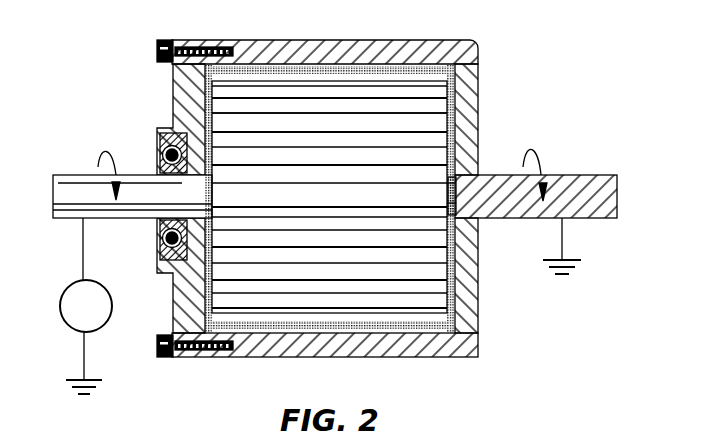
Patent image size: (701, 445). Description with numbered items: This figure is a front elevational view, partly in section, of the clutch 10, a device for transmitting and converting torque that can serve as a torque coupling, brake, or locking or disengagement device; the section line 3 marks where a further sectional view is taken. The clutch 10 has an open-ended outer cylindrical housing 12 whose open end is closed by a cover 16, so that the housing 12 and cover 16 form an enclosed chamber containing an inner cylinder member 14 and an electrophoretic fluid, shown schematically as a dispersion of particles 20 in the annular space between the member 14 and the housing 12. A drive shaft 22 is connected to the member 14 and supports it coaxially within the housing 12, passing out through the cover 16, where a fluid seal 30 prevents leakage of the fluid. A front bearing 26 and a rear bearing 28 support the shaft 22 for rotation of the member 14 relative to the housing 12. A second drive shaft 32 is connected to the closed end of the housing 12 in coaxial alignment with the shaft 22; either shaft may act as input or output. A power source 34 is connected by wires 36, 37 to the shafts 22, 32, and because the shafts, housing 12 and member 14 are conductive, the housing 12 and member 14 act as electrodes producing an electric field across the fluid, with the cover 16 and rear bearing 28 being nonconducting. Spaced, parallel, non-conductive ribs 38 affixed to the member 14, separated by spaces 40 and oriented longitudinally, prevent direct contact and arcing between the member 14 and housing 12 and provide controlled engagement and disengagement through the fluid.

The clutch 10 is at (108, 36).
The outer cylindrical housing 12 is at (460, 50).
The inner cylinder member 14 is at (432, 122).
The cover 16 is at (180, 88).
The particles 20 is at (263, 63).
The drive shaft 22 is at (82, 175).
The front bearing 26 is at (166, 240).
The rear bearing 28 is at (483, 270).
The fluid seal 30 is at (214, 232).
The drive shaft 32 is at (590, 175).
The power source 34 is at (106, 322).
The wire 36 is at (83, 252).
The wire 37 is at (563, 250).
The ribs 38 is at (385, 90).
The spaces 40 is at (227, 138).
The section line 3- 3 is at (340, 17).